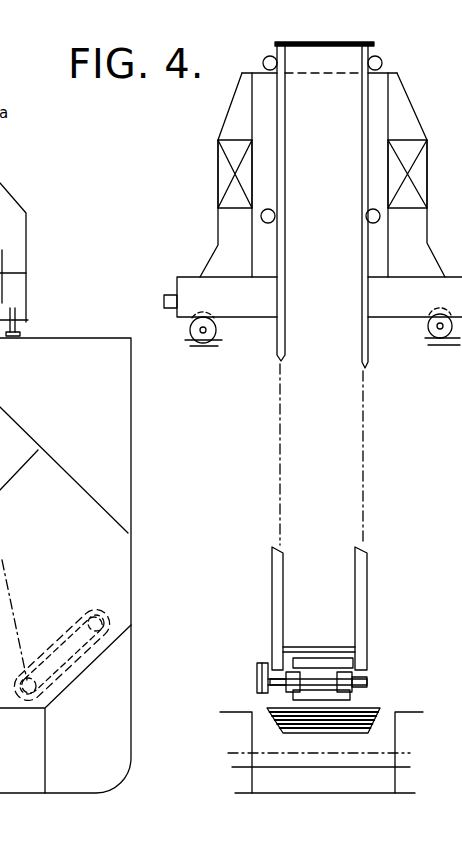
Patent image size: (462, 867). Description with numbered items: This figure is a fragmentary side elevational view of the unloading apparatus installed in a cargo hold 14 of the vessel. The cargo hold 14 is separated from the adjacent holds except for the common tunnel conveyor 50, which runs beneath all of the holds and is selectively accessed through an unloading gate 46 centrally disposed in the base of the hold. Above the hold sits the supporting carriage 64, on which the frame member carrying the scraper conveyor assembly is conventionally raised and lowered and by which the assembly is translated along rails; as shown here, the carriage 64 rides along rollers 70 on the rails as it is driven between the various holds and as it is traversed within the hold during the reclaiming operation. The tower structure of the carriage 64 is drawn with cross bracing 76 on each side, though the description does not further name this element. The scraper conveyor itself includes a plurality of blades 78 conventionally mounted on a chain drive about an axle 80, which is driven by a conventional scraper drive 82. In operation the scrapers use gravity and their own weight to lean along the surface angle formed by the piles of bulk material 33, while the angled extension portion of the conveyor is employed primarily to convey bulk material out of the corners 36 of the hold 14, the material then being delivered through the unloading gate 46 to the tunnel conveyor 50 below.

The cargo hold 14 is at (108, 545).
The pile of bulk material 33 is at (51, 554).
The corners of the hold 36 is at (66, 690).
The unloading gate 46 is at (297, 737).
The tunnel conveyor 50 is at (328, 778).
The supporting carriage 64 is at (423, 125).
The rollers 70 is at (212, 340).
The cross bracing 76 is at (216, 175).
The blades 78 is at (366, 688).
The axle 80 is at (315, 675).
The scraper drive 82 is at (259, 664).